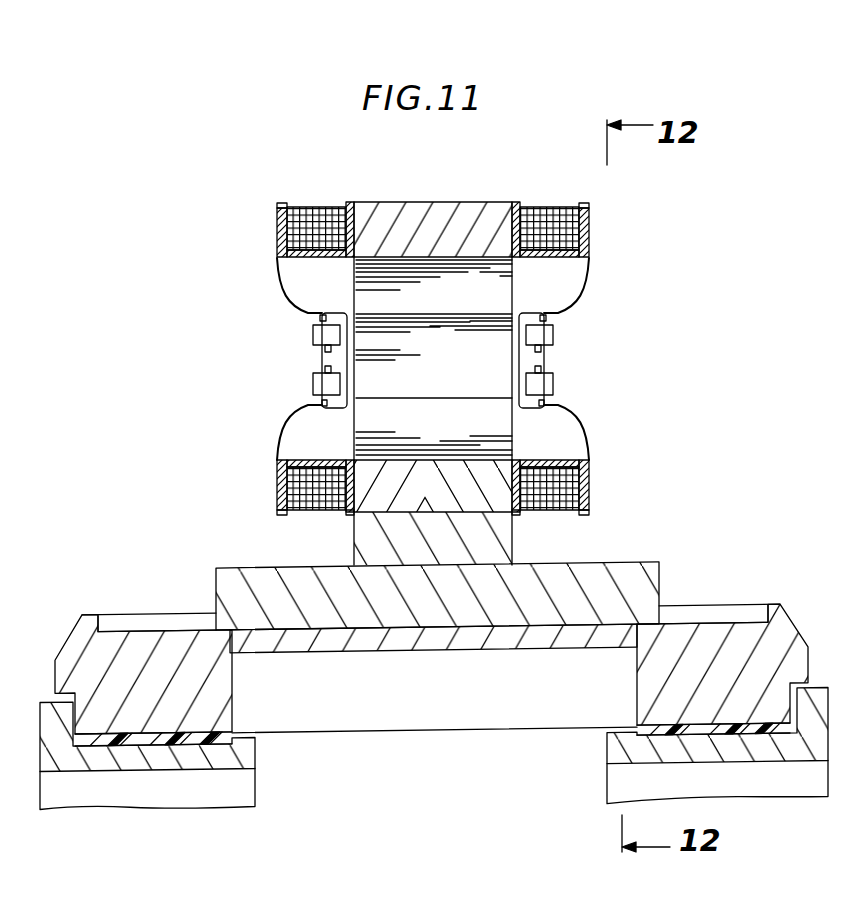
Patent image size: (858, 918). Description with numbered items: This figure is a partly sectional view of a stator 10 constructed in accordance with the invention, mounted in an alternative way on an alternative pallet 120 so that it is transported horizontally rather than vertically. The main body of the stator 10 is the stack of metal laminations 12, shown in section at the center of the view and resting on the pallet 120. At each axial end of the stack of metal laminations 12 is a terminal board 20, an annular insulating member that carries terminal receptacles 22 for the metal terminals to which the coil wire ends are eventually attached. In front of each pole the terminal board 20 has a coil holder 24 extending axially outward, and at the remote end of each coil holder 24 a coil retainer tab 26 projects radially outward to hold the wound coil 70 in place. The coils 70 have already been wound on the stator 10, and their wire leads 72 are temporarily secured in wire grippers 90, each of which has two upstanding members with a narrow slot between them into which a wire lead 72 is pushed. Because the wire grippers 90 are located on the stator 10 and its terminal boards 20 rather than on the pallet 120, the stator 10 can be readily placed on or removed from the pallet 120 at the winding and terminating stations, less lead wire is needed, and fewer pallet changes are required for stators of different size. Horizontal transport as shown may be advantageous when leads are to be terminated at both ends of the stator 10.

The stator 10 is at (462, 198).
The stack of metal laminations 12 is at (376, 206).
The terminal board 20 is at (349, 206).
The terminal receptacle 22 is at (533, 381).
The coil holder 24 is at (572, 460).
The coil retainer tab 26 is at (588, 490).
The coil 70 is at (556, 502).
The wire lead 72 is at (548, 407).
The wire gripper 90 is at (548, 396).
The pallet 120 is at (660, 588).